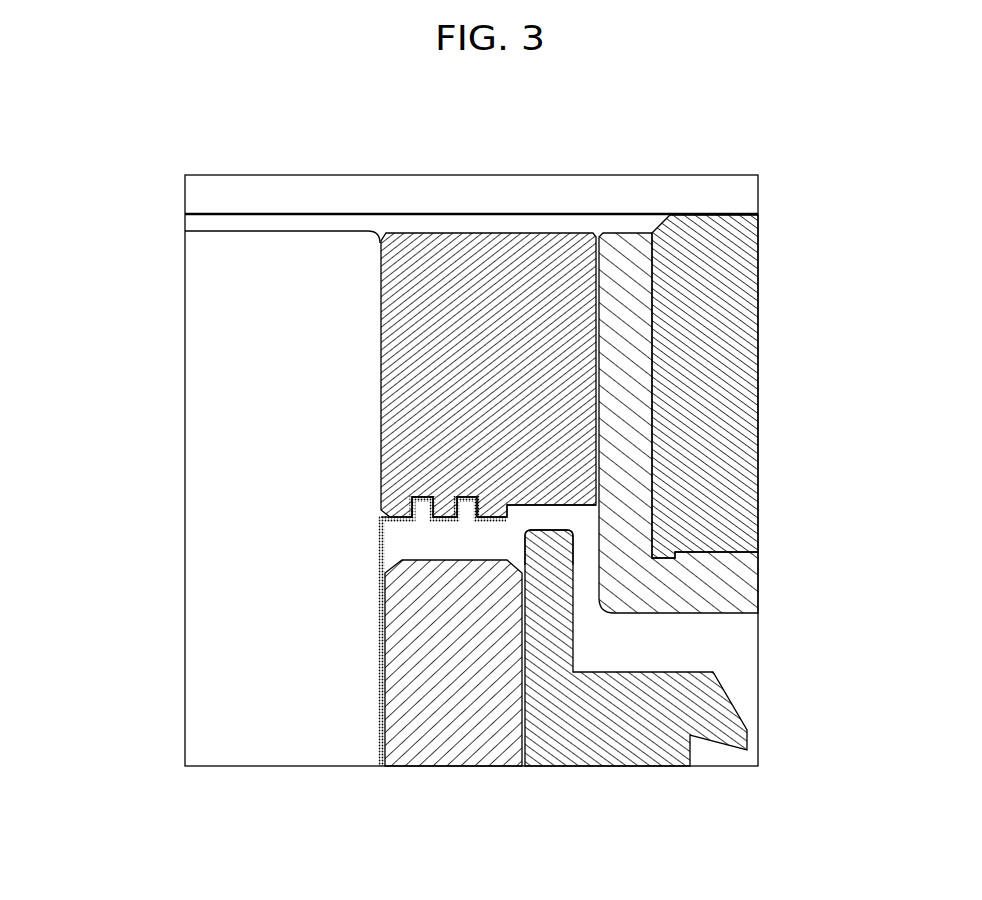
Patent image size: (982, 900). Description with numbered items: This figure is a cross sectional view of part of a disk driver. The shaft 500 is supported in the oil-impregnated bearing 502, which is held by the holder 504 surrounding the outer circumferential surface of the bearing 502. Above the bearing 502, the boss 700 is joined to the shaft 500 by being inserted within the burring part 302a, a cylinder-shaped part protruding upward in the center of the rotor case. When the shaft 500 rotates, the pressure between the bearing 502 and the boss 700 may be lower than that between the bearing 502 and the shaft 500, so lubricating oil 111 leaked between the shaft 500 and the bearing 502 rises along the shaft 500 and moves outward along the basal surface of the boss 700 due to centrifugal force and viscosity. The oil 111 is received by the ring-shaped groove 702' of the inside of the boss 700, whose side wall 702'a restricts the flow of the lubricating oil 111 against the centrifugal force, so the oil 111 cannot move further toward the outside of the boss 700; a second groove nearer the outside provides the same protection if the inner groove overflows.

The shaft 500 is at (218, 347).
The boss 700 is at (497, 258).
The burring part 302a is at (633, 258).
The side wall of the inner ring-shaped groove 702'a is at (273, 488).
The lubricating oil 111 is at (380, 524).
The ring-shaped groove of the inside of the boss 702' is at (290, 632).
The oil-impregnated bearing 502 is at (446, 745).
The holder 504 is at (620, 745).